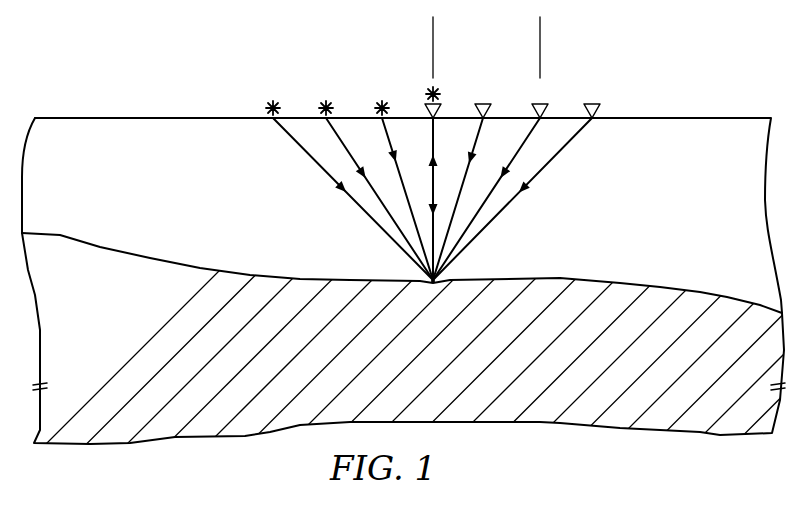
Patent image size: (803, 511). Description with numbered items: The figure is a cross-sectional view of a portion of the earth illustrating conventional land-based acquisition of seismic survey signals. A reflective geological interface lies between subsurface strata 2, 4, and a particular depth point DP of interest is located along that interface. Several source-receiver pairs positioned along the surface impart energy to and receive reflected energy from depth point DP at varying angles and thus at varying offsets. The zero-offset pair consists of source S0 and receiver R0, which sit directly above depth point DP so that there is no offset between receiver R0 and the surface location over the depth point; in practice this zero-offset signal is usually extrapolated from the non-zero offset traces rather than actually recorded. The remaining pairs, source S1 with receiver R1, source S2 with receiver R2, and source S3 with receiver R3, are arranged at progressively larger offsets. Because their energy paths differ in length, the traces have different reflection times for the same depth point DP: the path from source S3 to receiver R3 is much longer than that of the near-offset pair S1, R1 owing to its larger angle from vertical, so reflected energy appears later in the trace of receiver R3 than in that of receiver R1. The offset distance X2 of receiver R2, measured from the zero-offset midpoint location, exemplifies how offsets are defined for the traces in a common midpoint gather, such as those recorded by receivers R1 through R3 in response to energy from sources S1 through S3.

The subsurface stratum 2 is at (185, 211).
The subsurface stratum 4 is at (442, 373).
The zero-offset source S0 is at (432, 91).
The source S1 is at (382, 105).
The source S2 is at (326, 105).
The source S3 is at (273, 105).
The zero-offset receiver R0 is at (438, 105).
The receiver R1 is at (487, 105).
The receiver R2 is at (543, 105).
The receiver R3 is at (594, 105).
The offset distance X2 is at (434, 27).
The depth point DP is at (434, 284).